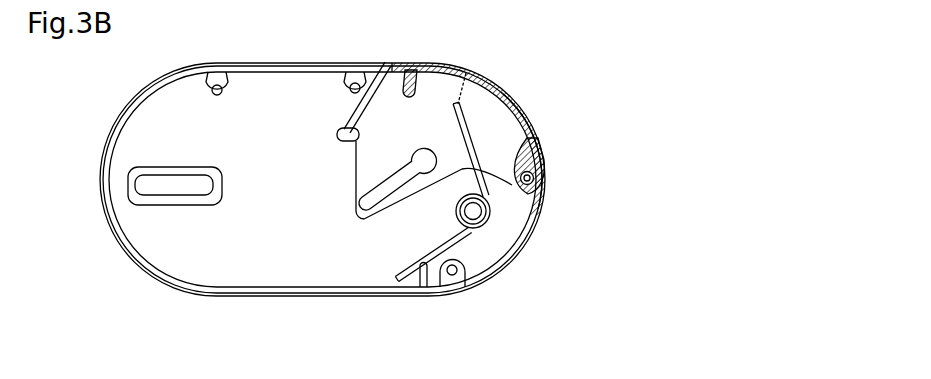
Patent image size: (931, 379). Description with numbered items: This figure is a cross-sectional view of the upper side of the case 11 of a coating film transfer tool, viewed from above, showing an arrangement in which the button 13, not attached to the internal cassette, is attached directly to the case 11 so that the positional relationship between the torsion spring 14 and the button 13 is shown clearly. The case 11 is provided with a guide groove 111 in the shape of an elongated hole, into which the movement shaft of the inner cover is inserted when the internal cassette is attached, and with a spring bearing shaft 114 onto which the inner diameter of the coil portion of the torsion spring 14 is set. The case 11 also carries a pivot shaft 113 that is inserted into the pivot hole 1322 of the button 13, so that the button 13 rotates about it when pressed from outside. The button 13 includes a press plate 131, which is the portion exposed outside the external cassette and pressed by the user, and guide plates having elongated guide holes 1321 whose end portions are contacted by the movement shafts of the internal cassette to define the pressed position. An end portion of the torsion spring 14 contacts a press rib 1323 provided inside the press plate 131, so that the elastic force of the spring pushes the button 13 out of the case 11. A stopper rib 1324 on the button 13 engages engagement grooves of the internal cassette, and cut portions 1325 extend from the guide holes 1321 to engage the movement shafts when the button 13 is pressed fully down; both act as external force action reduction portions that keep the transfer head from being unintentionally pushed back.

The case 11 is at (137, 98).
The guide groove 111 is at (130, 170).
The pivot shaft 113 is at (527, 178).
The spring bearing shaft 114 is at (475, 210).
The button 13 is at (485, 78).
The press plate 131 is at (522, 113).
The guide hole 1321 is at (376, 214).
The pivot hole 1322 is at (542, 183).
The press rib 1323 is at (465, 97).
The stopper rib 1324 is at (395, 67).
The cut portion 1325 is at (415, 152).
The torsion spring 14 is at (467, 227).